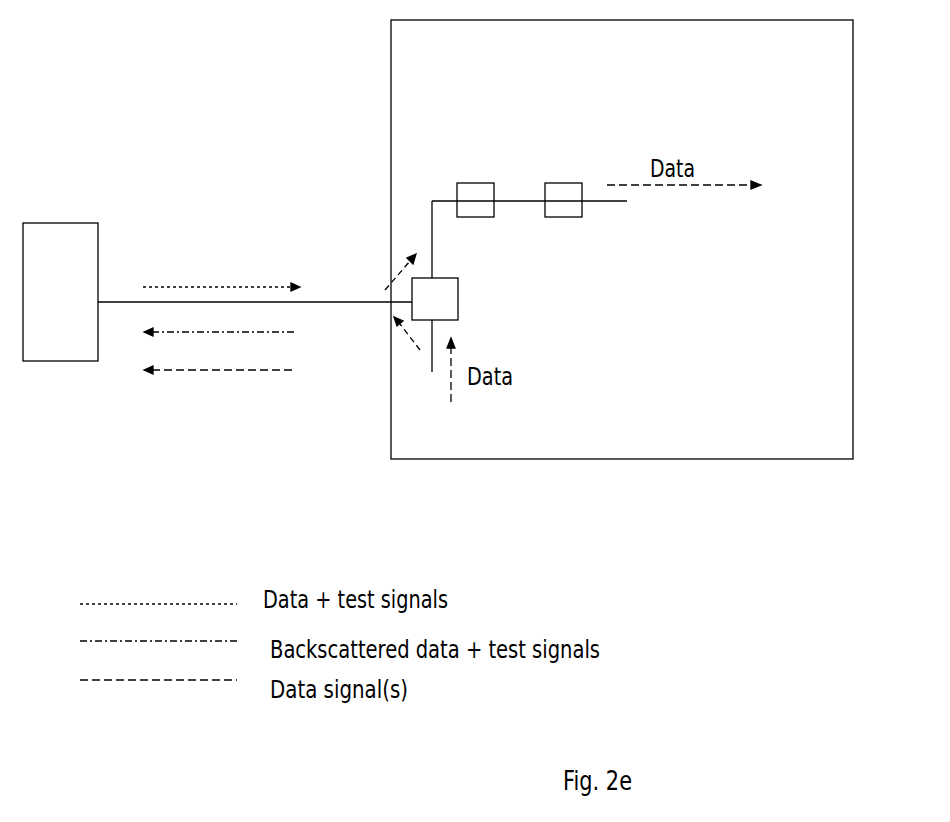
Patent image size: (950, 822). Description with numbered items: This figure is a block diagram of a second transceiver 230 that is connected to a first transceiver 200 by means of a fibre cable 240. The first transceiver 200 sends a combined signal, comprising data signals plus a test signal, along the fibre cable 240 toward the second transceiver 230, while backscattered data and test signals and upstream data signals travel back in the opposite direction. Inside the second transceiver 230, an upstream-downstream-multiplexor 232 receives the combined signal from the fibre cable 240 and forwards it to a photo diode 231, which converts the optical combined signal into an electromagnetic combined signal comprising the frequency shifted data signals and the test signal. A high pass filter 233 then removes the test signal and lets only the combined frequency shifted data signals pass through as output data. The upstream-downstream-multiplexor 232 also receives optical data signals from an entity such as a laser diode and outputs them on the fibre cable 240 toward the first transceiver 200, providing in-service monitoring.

The first transceiver 200 is at (47, 223).
The fibre cable 240 is at (195, 302).
The second transceiver 230 is at (443, 57).
The photo diode 231 is at (470, 183).
The upstream-downstream-multiplexor 232 is at (462, 318).
The high pass filter 233 is at (557, 183).